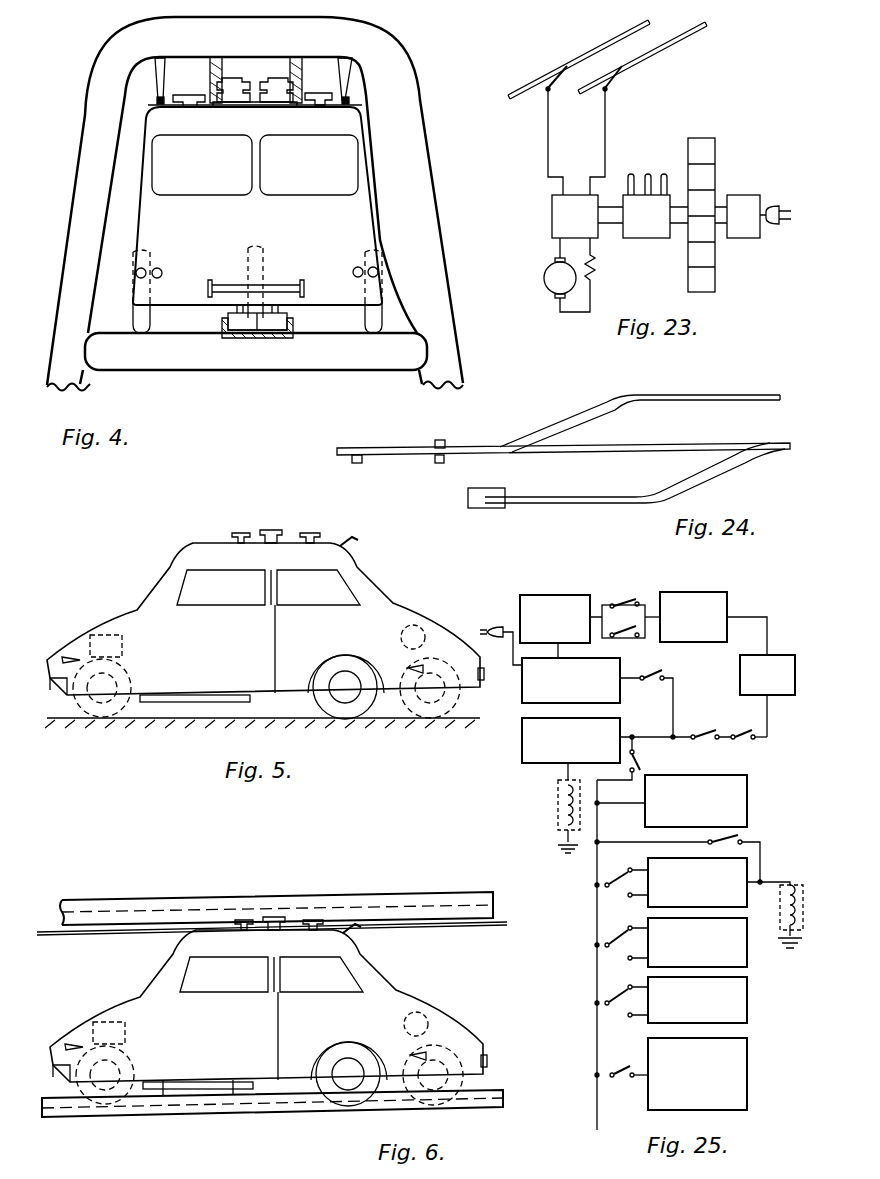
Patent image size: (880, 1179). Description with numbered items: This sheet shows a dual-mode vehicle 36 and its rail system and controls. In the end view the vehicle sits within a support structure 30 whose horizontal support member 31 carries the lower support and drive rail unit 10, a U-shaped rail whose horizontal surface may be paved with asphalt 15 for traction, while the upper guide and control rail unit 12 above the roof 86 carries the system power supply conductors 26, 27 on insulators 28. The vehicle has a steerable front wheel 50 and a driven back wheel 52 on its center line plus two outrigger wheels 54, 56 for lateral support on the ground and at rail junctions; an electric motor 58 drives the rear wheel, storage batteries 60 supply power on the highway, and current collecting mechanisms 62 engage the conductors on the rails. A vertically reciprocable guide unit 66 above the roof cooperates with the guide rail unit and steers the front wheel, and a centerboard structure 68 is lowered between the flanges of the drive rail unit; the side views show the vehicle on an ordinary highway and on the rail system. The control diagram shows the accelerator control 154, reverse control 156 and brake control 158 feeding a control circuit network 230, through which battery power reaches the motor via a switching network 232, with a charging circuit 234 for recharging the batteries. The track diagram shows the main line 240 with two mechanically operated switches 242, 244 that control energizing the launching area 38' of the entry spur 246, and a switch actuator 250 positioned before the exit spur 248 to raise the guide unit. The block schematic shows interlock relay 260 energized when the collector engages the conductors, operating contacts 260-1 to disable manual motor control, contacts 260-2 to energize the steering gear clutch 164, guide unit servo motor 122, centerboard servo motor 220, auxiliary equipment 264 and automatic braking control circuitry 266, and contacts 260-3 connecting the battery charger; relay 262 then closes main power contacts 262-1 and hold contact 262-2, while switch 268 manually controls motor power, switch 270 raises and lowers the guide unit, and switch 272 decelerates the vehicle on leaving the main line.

In FIG. 4, the lower support and drive rail unit 10 is at (242, 340).
In FIG. 6, the lower support and drive rail unit 10 is at (287, 1113).
In FIG. 4, the upper guide and control rail unit 12 is at (212, 56).
In FIG. 6, the upper guide and control rail unit 12 is at (322, 893).
In FIG. 4, the asphalt 15 is at (276, 336).
In FIG. 4, the system power supply conductor 26 is at (157, 103).
In FIG. 23, the system power supply conductor 26 is at (596, 46).
In FIG. 25, the system power supply conductor 26 is at (518, 742).
In FIG. 4, the system power supply conductor 27 is at (348, 99).
In FIG. 23, the system power supply conductor 27 is at (702, 27).
In FIG. 6, the system power supply conductor 27 is at (367, 924).
In FIG. 4, the insulators 28 is at (155, 78).
In FIG. 4, the support structures 30 is at (417, 153).
In FIG. 4, the horizontal support members 31 is at (367, 363).
In FIG. 4, the vehicle 36 is at (275, 226).
In FIG. 5, the vehicle 36 is at (180, 550).
In FIG. 6, the vehicle 36 is at (266, 999).
In FIG. 24, the launching area 38' is at (495, 487).
In FIG. 5, the steerable front wheel 50 is at (85, 703).
In FIG. 6, the steerable front wheel 50 is at (76, 1122).
In FIG. 4, the driven back wheel 52 is at (258, 316).
In FIG. 5, the driven back wheel 52 is at (463, 700).
In FIG. 6, the driven back wheel 52 is at (489, 1068).
In FIG. 4, the outrigger wheel 54 is at (140, 317).
In FIG. 5, the outrigger wheel 54 is at (362, 703).
In FIG. 6, the outrigger wheel 54 is at (269, 1095).
In FIG. 4, the outrigger wheel 56 is at (370, 313).
In FIG. 23, the electric motor 58 is at (553, 283).
In FIG. 5, the electric motor 58 is at (423, 623).
In FIG. 6, the electric motor 58 is at (435, 1012).
In FIG. 25, the electric motor 58 is at (780, 655).
In FIG. 23, the storage batteries 60 is at (715, 153).
In FIG. 5, the storage batteries 60 is at (107, 634).
In FIG. 6, the storage batteries 60 is at (96, 1021).
In FIG. 25, the storage batteries 60 is at (569, 597).
In FIG. 23, the current collecting mechanism 62 is at (547, 92).
In FIG. 5, the current collecting mechanism 62 is at (338, 542).
In FIG. 6, the current collecting mechanism 62 is at (330, 954).
In FIG. 25, the current collecting mechanism 62 is at (560, 764).
In FIG. 5, the guide unit 66 is at (275, 528).
In FIG. 4, the centerboard structure 68 is at (278, 318).
In FIG. 5, the centerboard structure 68 is at (175, 704).
In FIG. 6, the centerboard structure 68 is at (198, 1116).
In FIG. 5, the roof 86 is at (212, 542).
In FIG. 25, the guide unit servo motor 122 is at (748, 865).
In FIG. 23, the accelerator control 154 is at (666, 183).
In FIG. 23, the reverse control 156 is at (648, 172).
In FIG. 23, the brake control 158 is at (629, 173).
In FIG. 25, the electrically operated clutch 164 is at (763, 767).
In FIG. 25, the centerboard servo motor 220 is at (742, 950).
In FIG. 23, the control circuit network 230 is at (652, 228).
In FIG. 25, the control circuit network 230 is at (690, 594).
In FIG. 23, the switching network 232 is at (558, 213).
In FIG. 23, the charging circuit 234 is at (745, 197).
In FIG. 25, the charging circuit 234 is at (620, 672).
In FIG. 24, the main line 240 is at (660, 440).
In FIG. 24, the mechanically operated switch 242 is at (358, 464).
In FIG. 24, the mechanically operated switch 244 is at (438, 464).
In FIG. 24, the entry spur 246 is at (594, 497).
In FIG. 24, the exit spur 248 is at (588, 404).
In FIG. 24, the switch actuator 250 is at (442, 438).
In FIG. 25, the interlock relay 260 is at (595, 850).
In FIG. 25, the contacts 260-1 is at (655, 587).
In FIG. 25, the contacts 260-2 is at (639, 757).
In FIG. 25, the contacts 260-3 is at (641, 686).
In FIG. 25, the interlock relay 262 is at (777, 916).
In FIG. 25, the main power line control contacts 262-1 is at (742, 735).
In FIG. 25, the hold contact 262-2 is at (755, 833).
In FIG. 25, the auxiliary equipment 264 is at (742, 1013).
In FIG. 25, the automatic braking control circuitry 266 is at (742, 1087).
In FIG. 25, the switch 268 is at (700, 735).
In FIG. 25, the switch 270 is at (615, 872).
In FIG. 25, the switch 272 is at (620, 1072).